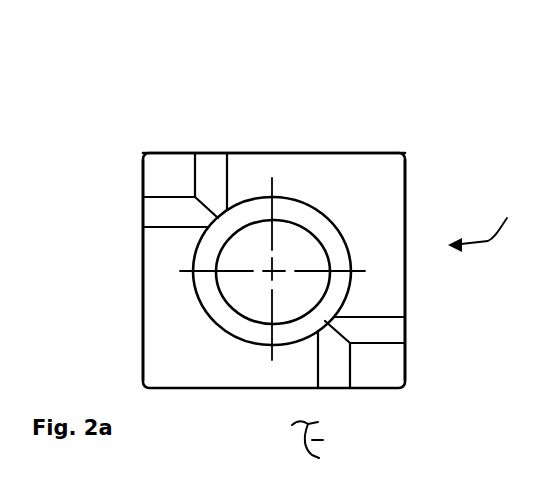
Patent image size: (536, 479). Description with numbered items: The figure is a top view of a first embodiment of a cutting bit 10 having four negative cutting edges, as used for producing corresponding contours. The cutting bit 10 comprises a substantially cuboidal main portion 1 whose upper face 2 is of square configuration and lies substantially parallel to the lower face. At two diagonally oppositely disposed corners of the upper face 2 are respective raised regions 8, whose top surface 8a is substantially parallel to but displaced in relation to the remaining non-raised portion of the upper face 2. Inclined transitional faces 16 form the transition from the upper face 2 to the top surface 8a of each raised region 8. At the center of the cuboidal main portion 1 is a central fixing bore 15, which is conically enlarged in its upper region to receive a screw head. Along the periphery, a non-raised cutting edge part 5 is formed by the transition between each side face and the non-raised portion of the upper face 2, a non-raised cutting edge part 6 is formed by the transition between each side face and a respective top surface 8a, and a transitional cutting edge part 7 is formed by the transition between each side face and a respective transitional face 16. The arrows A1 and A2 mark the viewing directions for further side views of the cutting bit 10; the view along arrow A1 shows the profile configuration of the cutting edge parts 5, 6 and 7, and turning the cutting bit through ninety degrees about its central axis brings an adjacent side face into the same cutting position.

The main portion 1 is at (288, 153).
The upper face 2 is at (353, 195).
The non-raised cutting edge part 5 is at (405, 227).
The non-raised cutting edge part 6 is at (405, 354).
The transitional cutting edge part 7 is at (405, 327).
The raised region 8 is at (170, 163).
The top surface 8a is at (160, 183).
The cutting bit 10 is at (390, 98).
The central fixing bore 15 is at (253, 302).
The inclined transitional face 16 is at (208, 170).
The viewing arrow A1 is at (489, 218).
The viewing arrow A2 is at (325, 444).